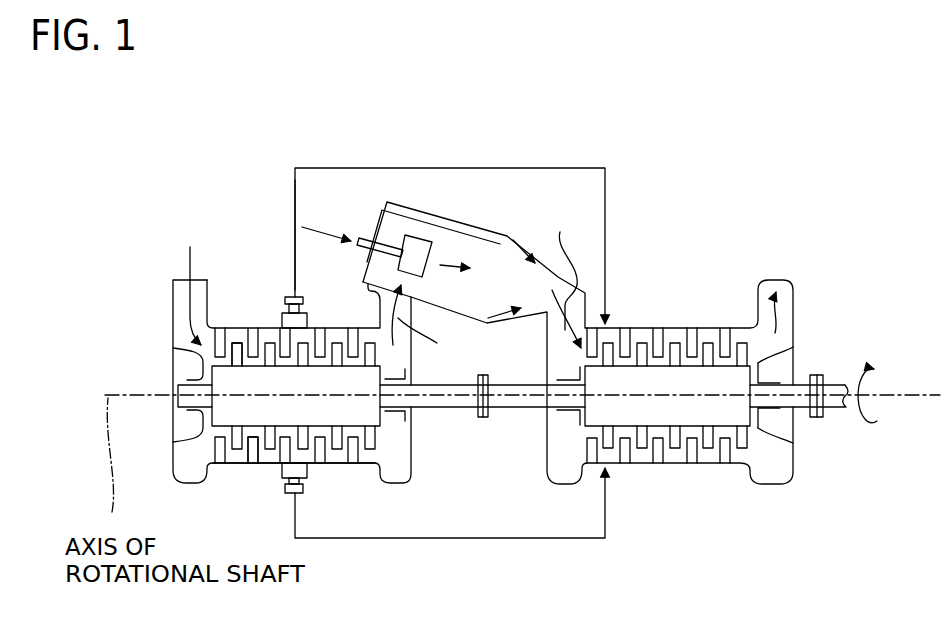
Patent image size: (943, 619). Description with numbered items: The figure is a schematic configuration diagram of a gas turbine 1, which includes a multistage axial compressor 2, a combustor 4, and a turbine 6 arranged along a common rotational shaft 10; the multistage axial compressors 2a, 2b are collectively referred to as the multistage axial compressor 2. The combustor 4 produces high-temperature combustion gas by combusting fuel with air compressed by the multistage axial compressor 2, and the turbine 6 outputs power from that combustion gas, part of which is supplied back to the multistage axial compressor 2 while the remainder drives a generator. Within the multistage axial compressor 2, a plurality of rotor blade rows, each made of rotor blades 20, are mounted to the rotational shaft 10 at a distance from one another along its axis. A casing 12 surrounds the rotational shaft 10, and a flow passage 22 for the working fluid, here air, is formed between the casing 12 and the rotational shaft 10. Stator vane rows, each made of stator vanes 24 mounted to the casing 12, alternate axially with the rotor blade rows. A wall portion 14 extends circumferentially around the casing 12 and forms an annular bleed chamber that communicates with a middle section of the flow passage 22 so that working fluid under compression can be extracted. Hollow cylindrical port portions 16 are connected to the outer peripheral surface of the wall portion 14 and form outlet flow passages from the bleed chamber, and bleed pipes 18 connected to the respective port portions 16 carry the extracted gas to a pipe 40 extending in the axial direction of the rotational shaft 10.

The gas turbine 1 is at (732, 140).
The multistage axial compressor 2 is at (310, 320).
The multistage axial compressor 2a is at (265, 354).
The multistage axial compressor 2b is at (265, 436).
The combustor 4 is at (477, 216).
The turbine 6 is at (732, 260).
The rotational shaft 10 is at (227, 413).
The casing 12 is at (233, 463).
The wall portion 14 is at (282, 315).
The port portion 16 is at (302, 307).
The bleed pipe 18 is at (293, 233).
The rotor blade 20 is at (233, 345).
The flow passage 22 is at (335, 453).
The stator vane 24 is at (252, 455).
The pipe 40 is at (505, 168).